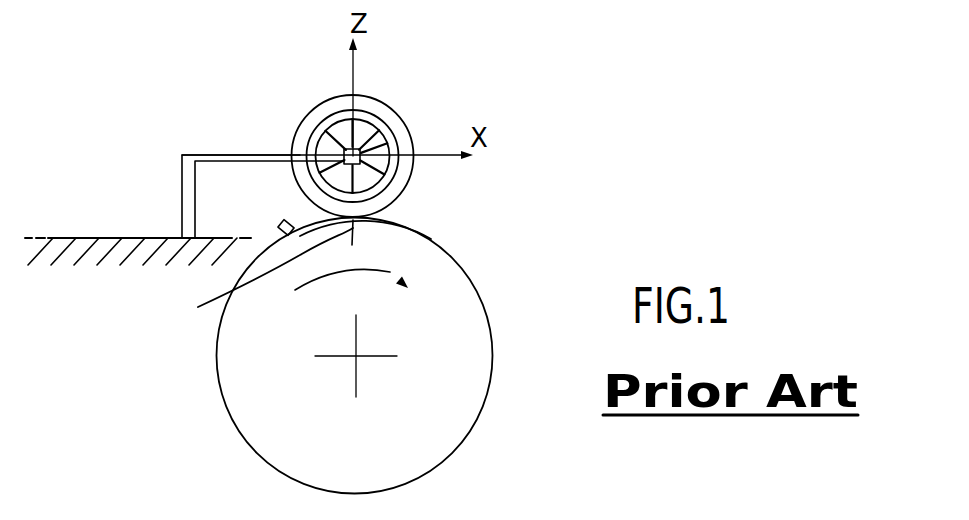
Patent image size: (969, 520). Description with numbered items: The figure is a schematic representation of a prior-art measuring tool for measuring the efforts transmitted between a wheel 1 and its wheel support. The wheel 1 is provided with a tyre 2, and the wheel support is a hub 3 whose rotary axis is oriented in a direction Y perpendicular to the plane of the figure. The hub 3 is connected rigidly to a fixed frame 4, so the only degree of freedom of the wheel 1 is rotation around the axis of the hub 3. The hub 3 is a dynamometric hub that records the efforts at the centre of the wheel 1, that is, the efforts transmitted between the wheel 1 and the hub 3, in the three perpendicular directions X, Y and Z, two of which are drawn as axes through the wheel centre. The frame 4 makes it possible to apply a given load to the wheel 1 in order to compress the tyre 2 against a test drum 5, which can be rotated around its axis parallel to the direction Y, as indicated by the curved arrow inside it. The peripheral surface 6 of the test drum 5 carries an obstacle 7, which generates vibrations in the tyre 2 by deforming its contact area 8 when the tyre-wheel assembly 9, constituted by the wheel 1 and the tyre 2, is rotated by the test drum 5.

The wheel 1 is at (323, 113).
The tyre 2 is at (297, 123).
The hub 3 is at (385, 142).
The fixed frame 4 is at (208, 154).
The test drum 5 is at (453, 318).
The peripheral surface 6 is at (430, 238).
The obstacle 7 is at (279, 221).
The contact area 8 is at (265, 273).
The tyre-wheel assembly 9 is at (377, 87).